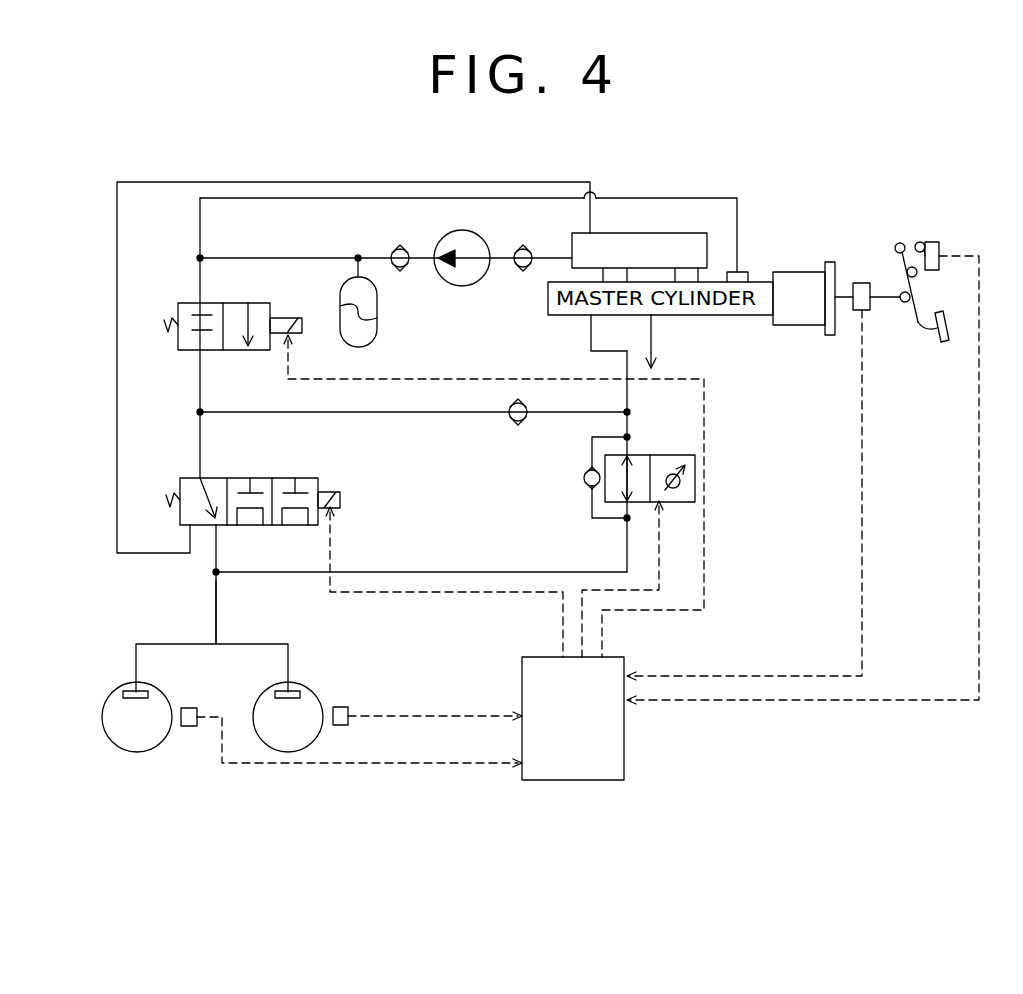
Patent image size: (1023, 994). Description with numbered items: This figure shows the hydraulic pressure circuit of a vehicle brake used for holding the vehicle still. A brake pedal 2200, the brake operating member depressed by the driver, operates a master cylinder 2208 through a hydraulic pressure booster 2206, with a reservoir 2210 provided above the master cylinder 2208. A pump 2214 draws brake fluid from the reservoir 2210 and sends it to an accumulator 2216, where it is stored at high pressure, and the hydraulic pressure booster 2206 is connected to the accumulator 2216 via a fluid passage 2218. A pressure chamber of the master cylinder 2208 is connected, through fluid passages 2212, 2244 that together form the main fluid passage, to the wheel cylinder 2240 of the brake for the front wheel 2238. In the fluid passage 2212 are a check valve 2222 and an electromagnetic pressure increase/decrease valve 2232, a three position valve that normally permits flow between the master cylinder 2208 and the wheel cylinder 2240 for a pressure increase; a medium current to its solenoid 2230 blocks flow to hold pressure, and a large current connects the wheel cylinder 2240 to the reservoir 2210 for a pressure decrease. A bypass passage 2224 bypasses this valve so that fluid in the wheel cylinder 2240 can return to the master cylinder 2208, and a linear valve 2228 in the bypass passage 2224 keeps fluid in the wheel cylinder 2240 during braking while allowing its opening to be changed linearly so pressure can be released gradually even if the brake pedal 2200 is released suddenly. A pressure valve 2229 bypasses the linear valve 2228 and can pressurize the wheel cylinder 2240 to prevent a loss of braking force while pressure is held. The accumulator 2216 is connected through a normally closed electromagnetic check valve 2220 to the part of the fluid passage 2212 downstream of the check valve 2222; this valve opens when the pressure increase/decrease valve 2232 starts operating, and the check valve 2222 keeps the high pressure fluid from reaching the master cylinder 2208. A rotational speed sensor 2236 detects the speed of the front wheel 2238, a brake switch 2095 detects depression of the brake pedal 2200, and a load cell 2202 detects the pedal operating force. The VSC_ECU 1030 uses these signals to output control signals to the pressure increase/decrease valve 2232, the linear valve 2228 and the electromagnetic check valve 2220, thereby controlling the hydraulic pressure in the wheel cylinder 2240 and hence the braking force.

The fluid passage 2218 is at (295, 202).
The electromagnetic check valve 2220 is at (255, 277).
The accumulator 2216 is at (377, 335).
The pump 2214 is at (468, 275).
The reservoir 2210 is at (570, 237).
The fluid passage 2212 is at (587, 337).
The master cylinder 2208 is at (693, 315).
The hydraulic pressure booster 2206 is at (765, 310).
The load cell 2202 is at (862, 283).
The brake switch 2095 is at (928, 242).
The brake pedal 2200 is at (913, 345).
The check valve 2222 is at (517, 425).
The pressure valve 2229 is at (585, 488).
The linear valve 2228 is at (678, 453).
The bypass passage 2224 is at (627, 555).
The electromagnetic pressure increase/decrease valve 2232 is at (240, 477).
The solenoid 2230 is at (330, 492).
The fluid passage 2244 is at (216, 597).
The front wheel 2238 is at (312, 702).
The wheel cylinder 2240 is at (176, 676).
The rotational speed sensor 2236 is at (348, 710).
The VSC_ECU 1030 is at (624, 748).